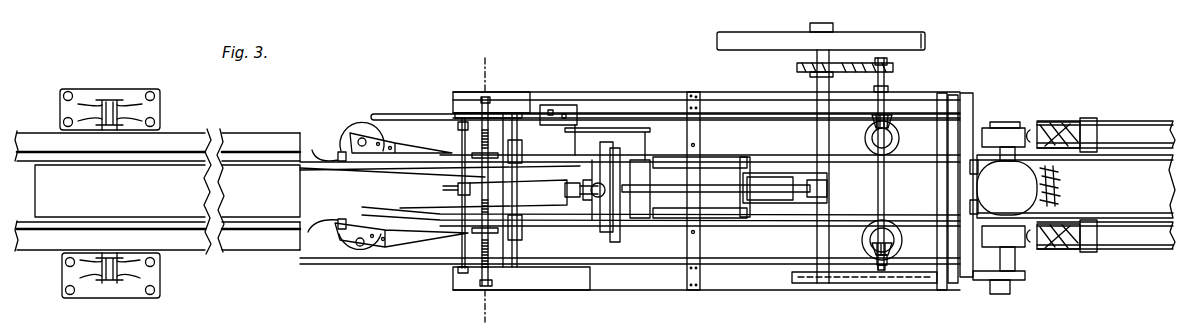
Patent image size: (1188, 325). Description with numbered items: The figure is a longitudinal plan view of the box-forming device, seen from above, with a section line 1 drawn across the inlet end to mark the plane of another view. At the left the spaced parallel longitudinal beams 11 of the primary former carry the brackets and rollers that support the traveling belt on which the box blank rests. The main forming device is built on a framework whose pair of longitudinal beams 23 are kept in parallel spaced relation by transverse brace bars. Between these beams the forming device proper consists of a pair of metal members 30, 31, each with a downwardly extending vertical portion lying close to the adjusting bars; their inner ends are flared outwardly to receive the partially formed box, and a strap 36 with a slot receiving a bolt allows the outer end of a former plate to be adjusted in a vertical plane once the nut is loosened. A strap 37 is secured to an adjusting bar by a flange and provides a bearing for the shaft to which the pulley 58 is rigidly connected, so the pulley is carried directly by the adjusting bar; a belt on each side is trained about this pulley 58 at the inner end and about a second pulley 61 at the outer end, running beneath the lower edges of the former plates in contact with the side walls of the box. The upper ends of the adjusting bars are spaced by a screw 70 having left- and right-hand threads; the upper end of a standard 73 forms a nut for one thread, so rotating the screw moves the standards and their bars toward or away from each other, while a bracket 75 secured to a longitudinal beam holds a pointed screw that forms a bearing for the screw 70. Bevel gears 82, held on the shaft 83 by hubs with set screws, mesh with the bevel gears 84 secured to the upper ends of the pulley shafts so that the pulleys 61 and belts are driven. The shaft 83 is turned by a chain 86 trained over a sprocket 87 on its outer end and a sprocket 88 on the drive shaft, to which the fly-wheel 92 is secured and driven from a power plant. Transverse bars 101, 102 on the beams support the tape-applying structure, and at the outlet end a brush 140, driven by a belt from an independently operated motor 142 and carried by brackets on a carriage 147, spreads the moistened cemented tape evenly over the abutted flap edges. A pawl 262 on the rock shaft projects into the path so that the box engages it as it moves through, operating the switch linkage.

The section line 1 is at (499, 60).
The longitudinal beams 11 is at (177, 143).
The longitudinal beams 23 is at (650, 84).
The metal member 30 is at (393, 213).
The metal member 31 is at (383, 170).
The strap 36 is at (342, 143).
The strap 37 is at (398, 140).
The pulley 58 is at (371, 113).
The pulley 61 is at (863, 140).
The screw 70 is at (458, 186).
The standard 73 is at (472, 229).
The bracket 75 is at (490, 105).
The bevel gears 82 is at (870, 122).
The shaft 83 is at (890, 89).
The bevel gears 84 is at (896, 136).
The chain 86 is at (843, 65).
The sprocket 87 is at (890, 66).
The sprocket 88 is at (810, 77).
The fly-wheel 92 is at (900, 33).
The bar 101 is at (690, 258).
The bar 102 is at (927, 253).
The brush 140 is at (1048, 201).
The motor 142 is at (1058, 176).
The carriage 147 is at (1160, 188).
The pawl 262 is at (446, 186).